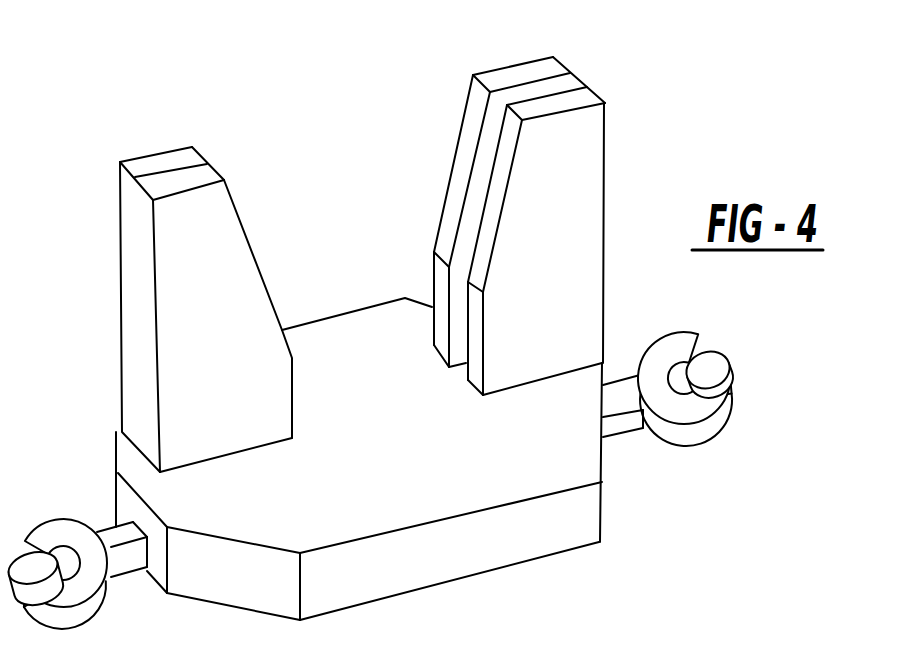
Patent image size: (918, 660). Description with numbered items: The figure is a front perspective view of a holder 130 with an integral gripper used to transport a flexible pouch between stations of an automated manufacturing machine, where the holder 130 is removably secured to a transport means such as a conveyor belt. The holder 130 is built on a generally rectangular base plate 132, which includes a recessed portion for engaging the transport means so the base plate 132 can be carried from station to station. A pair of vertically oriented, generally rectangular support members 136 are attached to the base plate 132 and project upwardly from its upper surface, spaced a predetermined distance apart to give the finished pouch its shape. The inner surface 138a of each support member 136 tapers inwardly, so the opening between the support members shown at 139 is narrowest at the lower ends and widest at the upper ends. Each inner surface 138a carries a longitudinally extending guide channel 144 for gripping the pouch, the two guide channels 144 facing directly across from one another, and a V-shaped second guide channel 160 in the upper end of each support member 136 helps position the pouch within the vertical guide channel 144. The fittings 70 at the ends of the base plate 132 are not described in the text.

The holder 130 is at (300, 108).
The base plate 132 is at (601, 510).
The support member 136 is at (607, 197).
The inner surface 138a is at (463, 154).
The opening between the support members 139 is at (423, 242).
The guide channel 144 is at (475, 202).
The second guide channel 160 is at (533, 92).
The clamp 70 is at (107, 600).